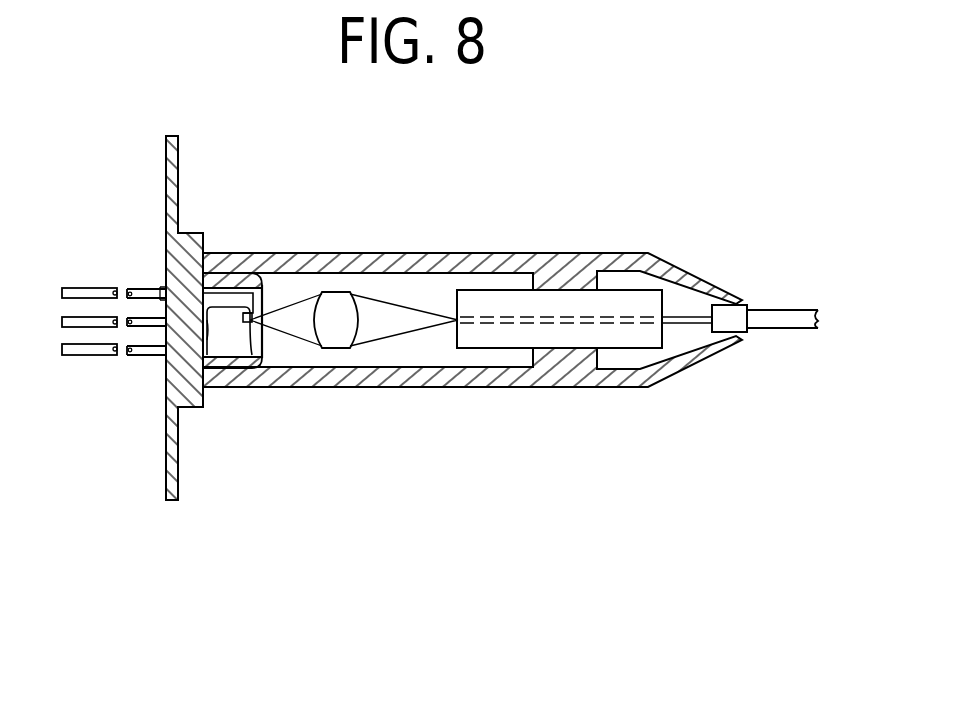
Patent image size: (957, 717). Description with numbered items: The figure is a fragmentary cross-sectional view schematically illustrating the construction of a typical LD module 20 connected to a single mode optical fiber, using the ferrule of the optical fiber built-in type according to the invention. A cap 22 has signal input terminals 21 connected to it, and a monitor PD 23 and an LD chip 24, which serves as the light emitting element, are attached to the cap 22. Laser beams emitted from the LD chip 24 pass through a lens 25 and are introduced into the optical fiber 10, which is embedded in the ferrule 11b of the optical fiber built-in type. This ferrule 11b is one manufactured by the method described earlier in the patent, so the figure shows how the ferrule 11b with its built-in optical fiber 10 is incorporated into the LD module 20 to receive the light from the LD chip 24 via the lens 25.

The optical fiber 10 is at (692, 322).
The ferrule of the optical fiber built-in type 11b is at (638, 288).
The LD module 20 is at (484, 253).
The signal input terminals 21 is at (92, 279).
The cap 22 is at (263, 297).
The monitor PD 23 is at (211, 345).
The LD chip 24 is at (248, 323).
The lens 25 is at (338, 290).